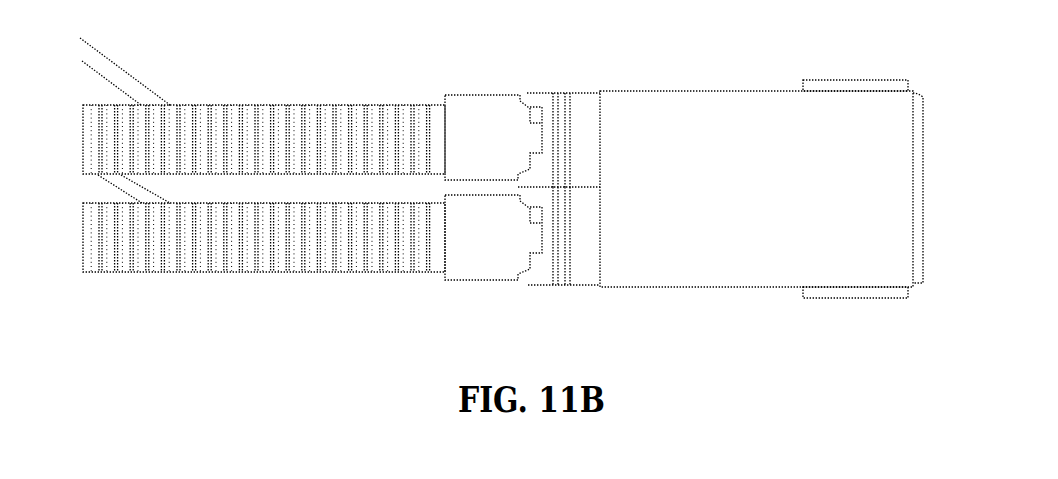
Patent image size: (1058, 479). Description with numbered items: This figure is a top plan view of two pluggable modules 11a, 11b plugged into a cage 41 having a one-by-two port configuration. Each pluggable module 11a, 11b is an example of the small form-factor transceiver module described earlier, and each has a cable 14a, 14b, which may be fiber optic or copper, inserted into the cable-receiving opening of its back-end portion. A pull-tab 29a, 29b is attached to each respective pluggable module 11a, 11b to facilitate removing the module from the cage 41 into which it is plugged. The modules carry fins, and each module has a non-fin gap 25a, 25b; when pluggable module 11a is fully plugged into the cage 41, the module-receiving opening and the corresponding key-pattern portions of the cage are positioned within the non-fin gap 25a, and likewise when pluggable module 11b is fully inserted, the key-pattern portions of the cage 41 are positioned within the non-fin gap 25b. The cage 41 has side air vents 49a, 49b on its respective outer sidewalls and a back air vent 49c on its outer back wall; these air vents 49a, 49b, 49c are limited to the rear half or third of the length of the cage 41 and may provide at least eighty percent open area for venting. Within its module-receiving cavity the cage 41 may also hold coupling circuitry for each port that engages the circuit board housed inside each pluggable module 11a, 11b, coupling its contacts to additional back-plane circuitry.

The wire/cable 14a is at (128, 72).
The wire/cable 14b is at (152, 188).
The pull-tab 29a is at (340, 105).
The pull-tab 29b is at (340, 203).
The pluggable module 11a is at (478, 73).
The pluggable module 11b is at (473, 298).
The non-fin gap 25a is at (583, 107).
The non-fin gap 25b is at (583, 270).
The cage 41 is at (722, 70).
The side air vent 49a is at (855, 80).
The side air vent 49b is at (857, 298).
The back air vent 49c is at (923, 108).